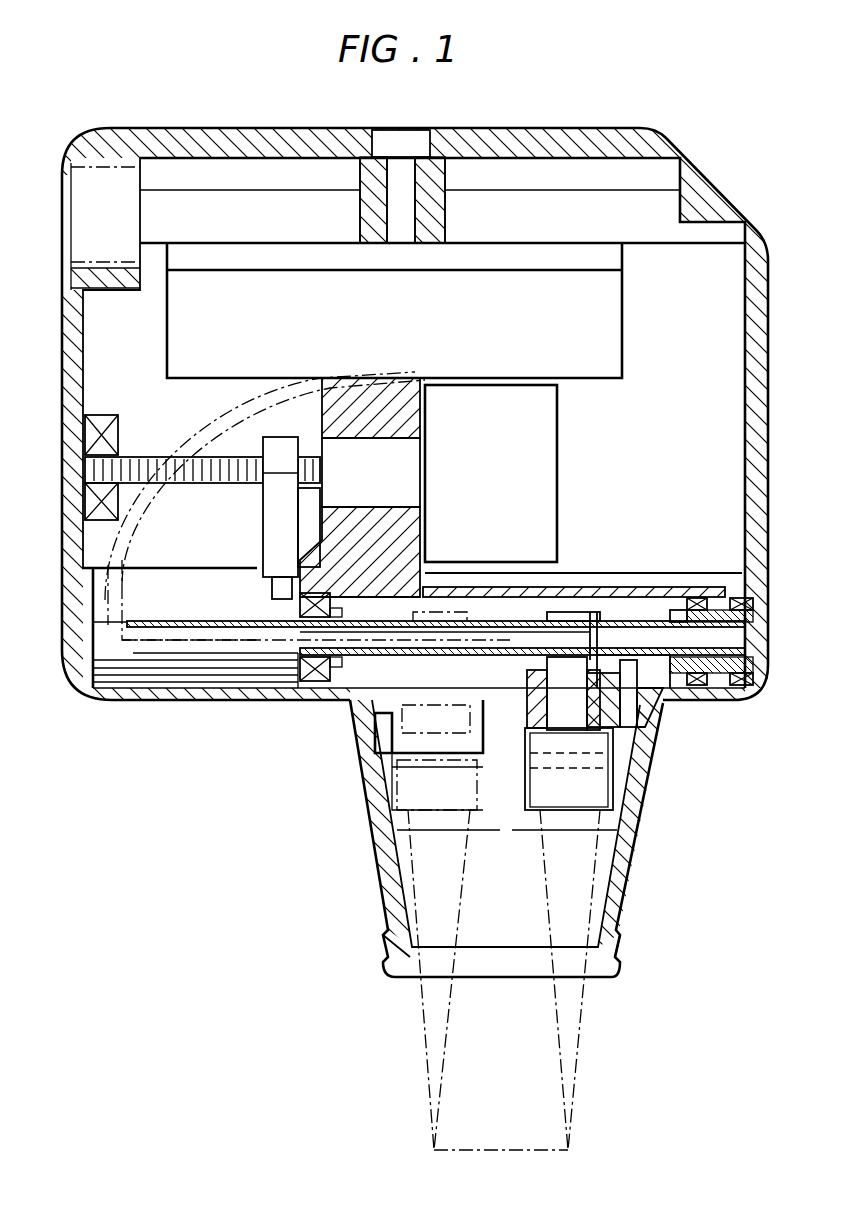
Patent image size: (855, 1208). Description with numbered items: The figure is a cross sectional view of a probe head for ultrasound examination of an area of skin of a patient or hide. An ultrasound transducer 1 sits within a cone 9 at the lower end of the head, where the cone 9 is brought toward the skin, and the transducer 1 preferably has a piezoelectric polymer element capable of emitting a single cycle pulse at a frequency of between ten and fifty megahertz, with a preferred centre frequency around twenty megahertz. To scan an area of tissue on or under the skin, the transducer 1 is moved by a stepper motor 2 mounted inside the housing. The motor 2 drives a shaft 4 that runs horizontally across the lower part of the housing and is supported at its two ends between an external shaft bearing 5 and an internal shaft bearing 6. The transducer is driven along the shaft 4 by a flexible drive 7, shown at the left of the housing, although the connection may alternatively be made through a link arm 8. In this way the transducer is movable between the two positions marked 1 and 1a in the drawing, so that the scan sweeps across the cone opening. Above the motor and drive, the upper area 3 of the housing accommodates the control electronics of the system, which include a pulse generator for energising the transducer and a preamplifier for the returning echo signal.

The transducer 1 is at (600, 793).
The transducer position 1a is at (412, 790).
The stepper motor 2 is at (547, 453).
The area housing control electronics 3 is at (398, 336).
The shaft 4 is at (657, 707).
The external shaft bearing 5 is at (710, 672).
The internal shaft bearing 6 is at (330, 680).
The flexible drive 7 is at (165, 455).
The link arm 8 is at (263, 603).
The cone 9 is at (385, 928).